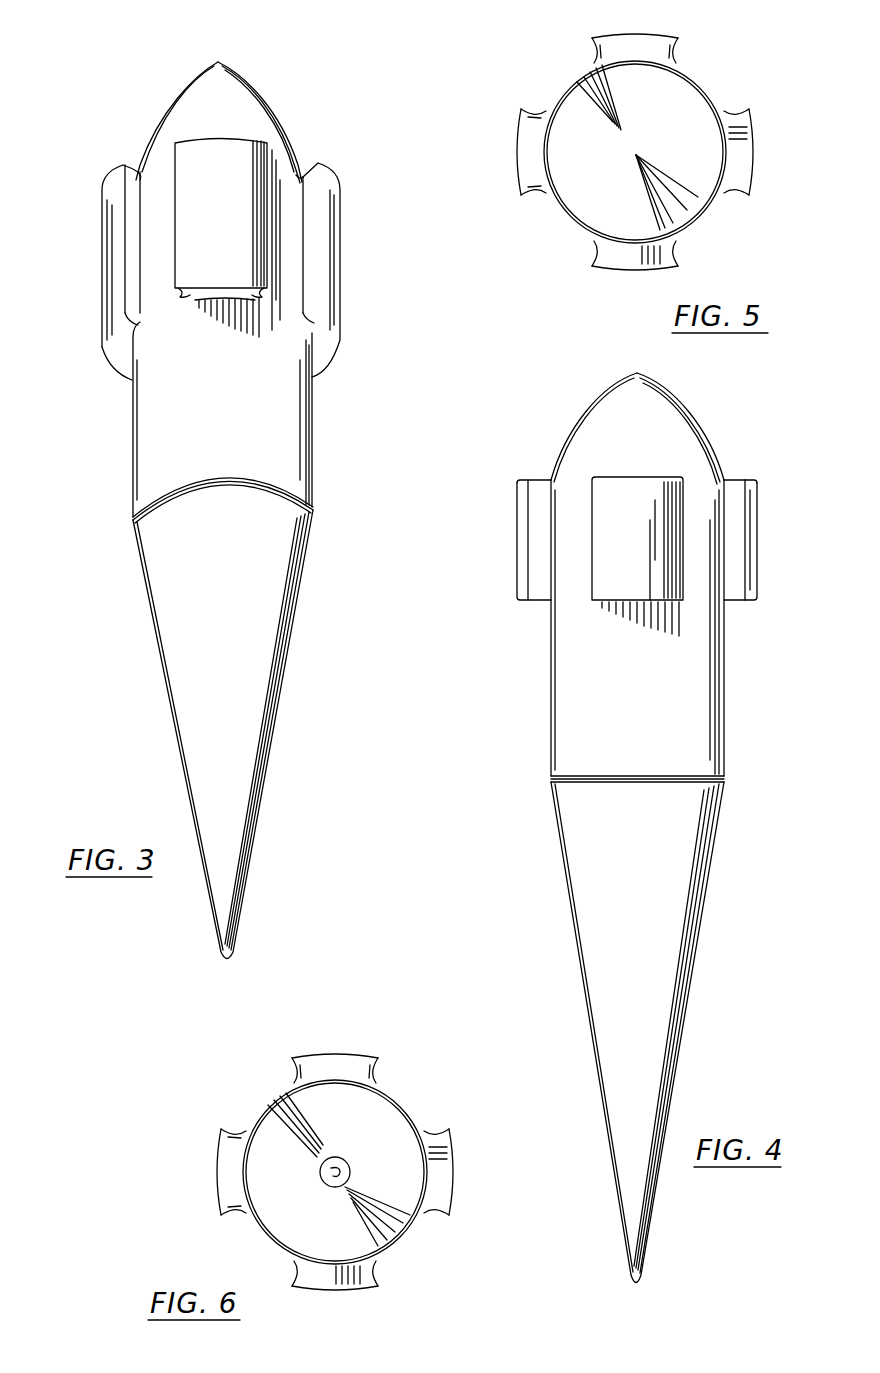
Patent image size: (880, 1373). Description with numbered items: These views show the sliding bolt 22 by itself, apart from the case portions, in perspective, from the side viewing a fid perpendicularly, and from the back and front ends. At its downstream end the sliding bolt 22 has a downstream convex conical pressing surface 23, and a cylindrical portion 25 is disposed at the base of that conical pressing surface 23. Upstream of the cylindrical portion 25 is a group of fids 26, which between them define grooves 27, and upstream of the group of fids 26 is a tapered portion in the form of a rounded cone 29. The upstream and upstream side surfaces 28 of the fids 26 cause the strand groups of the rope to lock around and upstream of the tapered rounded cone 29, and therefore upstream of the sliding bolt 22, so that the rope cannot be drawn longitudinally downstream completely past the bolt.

In FIG. 3, the sliding bolt 22 is at (138, 582).
In FIG. 4, the sliding bolt 22 is at (545, 868).
In FIG. 5, the sliding bolt 22 is at (764, 122).
In FIG. 6, the sliding bolt 22 is at (397, 1068).
In FIG. 3, the downstream convex conical pressing surface 23 is at (242, 682).
In FIG. 4, the downstream convex conical pressing surface 23 is at (606, 994).
In FIG. 6, the downstream convex conical pressing surface 23 is at (320, 1125).
In FIG. 3, the cylindrical portion 25 is at (155, 430).
In FIG. 4, the cylindrical portion 25 is at (557, 740).
In FIG. 3, the fids 26 is at (205, 232).
In FIG. 4, the fids 26 is at (622, 550).
In FIG. 5, the fids 26 is at (608, 270).
In FIG. 6, the fids 26 is at (325, 1052).
In FIG. 3, the grooves 27 is at (287, 257).
In FIG. 4, the grooves 27 is at (567, 538).
In FIG. 5, the grooves 27 is at (567, 220).
In FIG. 3, the upstream and upstream side surfaces of the fids 28 is at (307, 165).
In FIG. 4, the upstream and upstream side surfaces of the fids 28 is at (540, 478).
In FIG. 5, the upstream and upstream side surfaces of the fids 28 is at (540, 113).
In FIG. 3, the rounded cone 29 is at (237, 88).
In FIG. 4, the rounded cone 29 is at (590, 404).
In FIG. 5, the rounded cone 29 is at (595, 123).